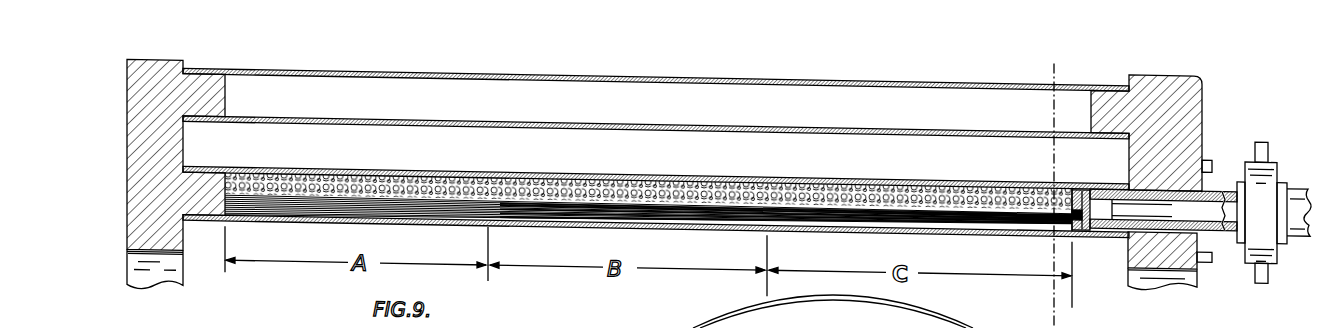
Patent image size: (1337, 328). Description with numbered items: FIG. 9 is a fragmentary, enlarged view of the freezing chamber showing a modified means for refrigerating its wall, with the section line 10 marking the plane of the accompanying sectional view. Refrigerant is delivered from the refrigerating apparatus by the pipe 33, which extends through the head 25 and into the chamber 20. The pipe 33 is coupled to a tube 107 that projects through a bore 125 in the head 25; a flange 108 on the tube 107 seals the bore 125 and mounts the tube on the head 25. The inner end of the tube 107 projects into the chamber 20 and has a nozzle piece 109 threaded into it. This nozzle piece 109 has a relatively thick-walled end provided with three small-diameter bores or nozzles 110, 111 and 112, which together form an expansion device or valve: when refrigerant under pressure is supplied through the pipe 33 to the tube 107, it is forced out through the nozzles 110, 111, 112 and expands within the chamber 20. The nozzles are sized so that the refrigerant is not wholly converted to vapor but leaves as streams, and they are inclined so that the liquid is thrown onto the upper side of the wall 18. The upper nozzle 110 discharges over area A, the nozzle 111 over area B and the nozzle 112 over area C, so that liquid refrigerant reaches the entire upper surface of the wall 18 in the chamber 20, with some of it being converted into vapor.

The section line 10- 10 is at (1046, 52).
The wall 18 is at (855, 212).
The chamber 20 is at (1002, 167).
The head 25 is at (1186, 88).
The pipe 33 is at (1300, 202).
The tube 107 is at (1172, 179).
The flange 108 is at (1198, 247).
The nozzle piece 109 is at (1105, 184).
The upper nozzle 110 is at (1081, 170).
The nozzle 111 is at (1081, 211).
The nozzle 112 is at (1090, 211).
The bore 125 is at (1160, 164).